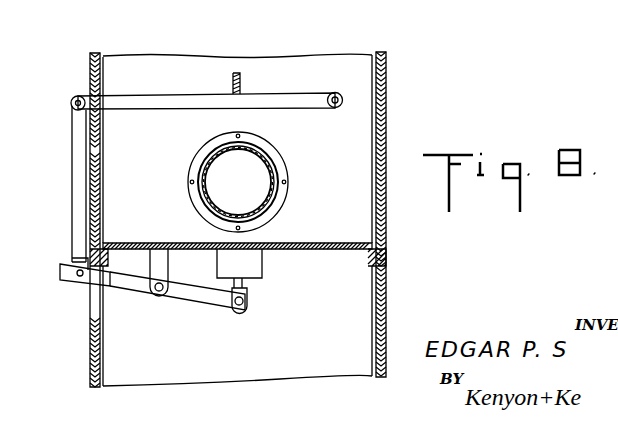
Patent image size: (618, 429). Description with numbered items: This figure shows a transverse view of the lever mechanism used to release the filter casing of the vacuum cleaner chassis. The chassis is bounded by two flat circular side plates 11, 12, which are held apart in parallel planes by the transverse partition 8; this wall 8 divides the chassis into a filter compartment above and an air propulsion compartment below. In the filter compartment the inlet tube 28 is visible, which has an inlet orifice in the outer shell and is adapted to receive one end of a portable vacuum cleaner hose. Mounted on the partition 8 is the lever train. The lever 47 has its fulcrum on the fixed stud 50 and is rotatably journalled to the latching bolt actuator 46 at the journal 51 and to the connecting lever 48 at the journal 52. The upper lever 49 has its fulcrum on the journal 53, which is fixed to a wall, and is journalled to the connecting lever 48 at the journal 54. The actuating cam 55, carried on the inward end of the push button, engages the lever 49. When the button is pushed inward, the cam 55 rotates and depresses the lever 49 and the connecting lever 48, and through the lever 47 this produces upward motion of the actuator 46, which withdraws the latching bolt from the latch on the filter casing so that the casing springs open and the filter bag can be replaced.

The transverse partition 8 is at (306, 250).
The side plate 11 is at (90, 357).
The side plate 12 is at (388, 290).
The tube 28 is at (270, 160).
The latching bolt actuator 46 is at (246, 283).
The lever 47 is at (205, 297).
The connecting lever 48 is at (72, 181).
The lever 49 is at (186, 97).
The fixed stud 50 is at (156, 296).
The journal 51 is at (243, 306).
The journal 52 is at (73, 282).
The journal 53 is at (340, 92).
The journal 54 is at (72, 100).
The actuating cam 55 is at (242, 80).